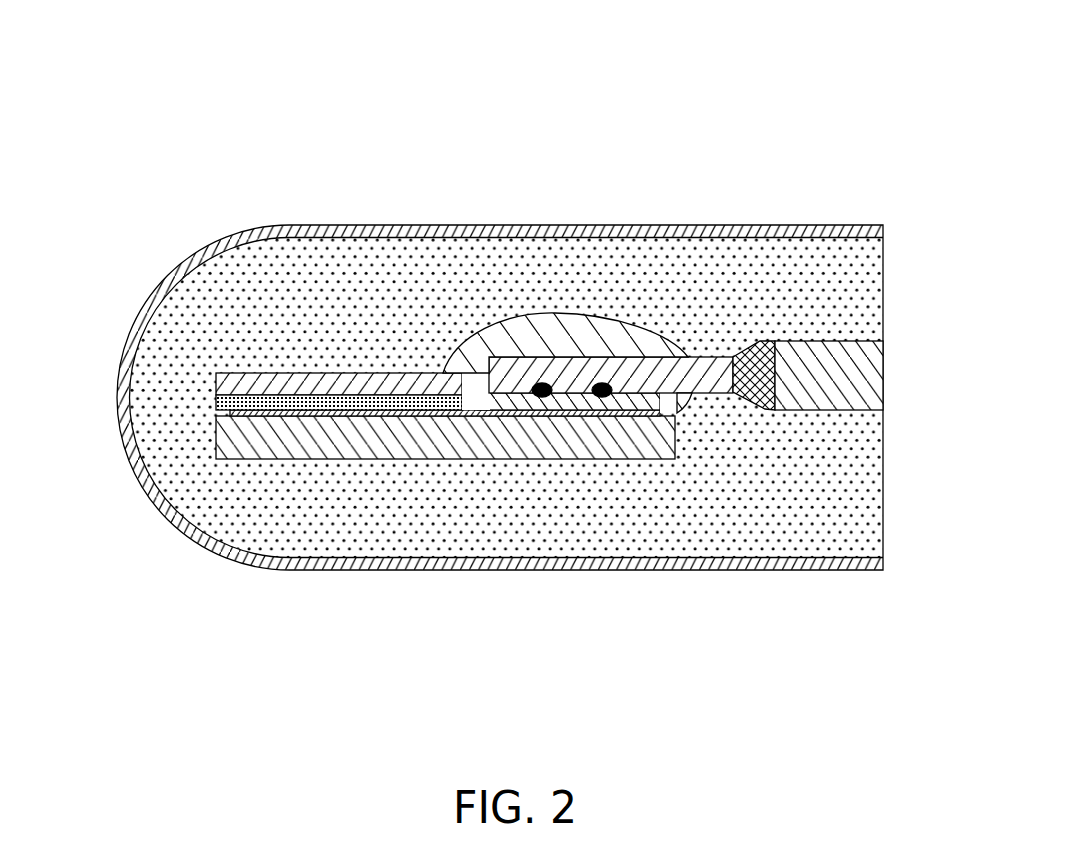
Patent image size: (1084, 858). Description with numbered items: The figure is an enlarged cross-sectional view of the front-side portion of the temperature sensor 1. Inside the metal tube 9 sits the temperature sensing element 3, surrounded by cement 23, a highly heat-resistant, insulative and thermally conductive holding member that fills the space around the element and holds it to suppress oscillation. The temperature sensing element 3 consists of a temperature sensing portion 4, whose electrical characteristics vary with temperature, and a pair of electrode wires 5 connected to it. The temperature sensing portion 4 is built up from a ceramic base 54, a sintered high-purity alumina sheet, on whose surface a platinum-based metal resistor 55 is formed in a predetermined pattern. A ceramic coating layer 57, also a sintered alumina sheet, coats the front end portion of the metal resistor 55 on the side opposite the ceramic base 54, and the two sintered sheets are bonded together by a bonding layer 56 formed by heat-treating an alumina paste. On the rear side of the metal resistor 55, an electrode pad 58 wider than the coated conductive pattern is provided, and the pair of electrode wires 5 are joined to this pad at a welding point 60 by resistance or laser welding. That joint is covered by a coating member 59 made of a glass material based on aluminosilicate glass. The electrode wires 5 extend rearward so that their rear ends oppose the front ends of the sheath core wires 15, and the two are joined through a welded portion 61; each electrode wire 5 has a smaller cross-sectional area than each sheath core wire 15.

The temperature sensor 1 is at (674, 90).
The temperature sensing element 3 is at (334, 372).
The temperature sensing portion 4 is at (612, 461).
The electrode wires 5 is at (700, 370).
The metal tube 9 is at (394, 226).
The sheath core wires 15 is at (830, 367).
The cement 23 is at (767, 525).
The ceramic base 54 is at (312, 450).
The metal resistor 55 is at (463, 413).
The bonding layer 56 is at (217, 400).
The ceramic coating layer 57 is at (262, 377).
The electrode pad 58 is at (517, 407).
The coating member 59 is at (638, 342).
The welding point 60 is at (537, 383).
The welded portion 61 is at (757, 352).